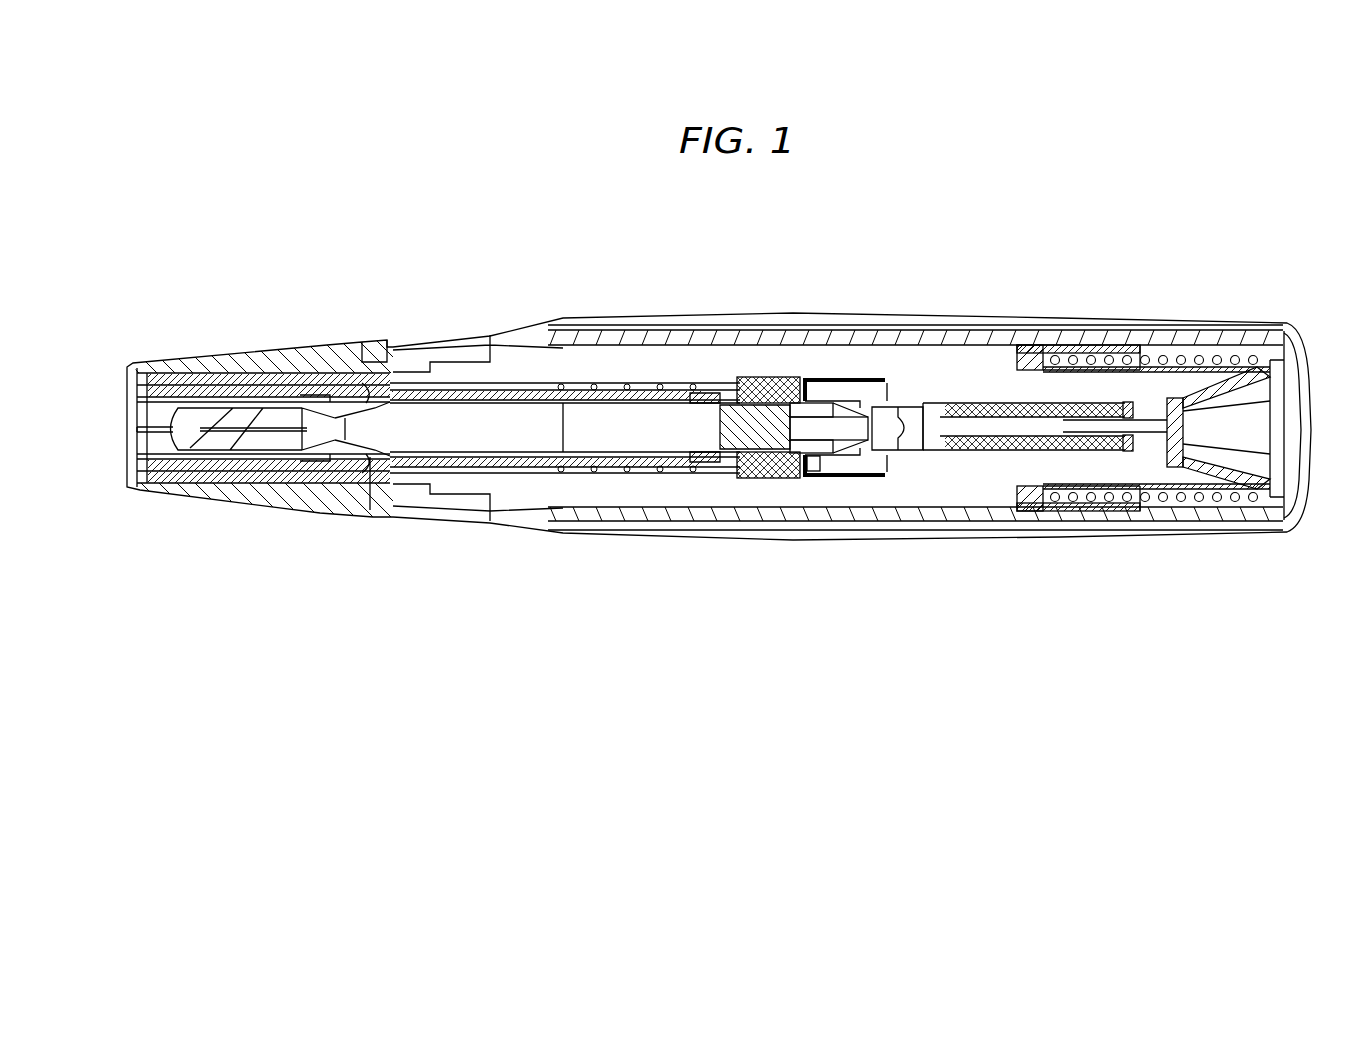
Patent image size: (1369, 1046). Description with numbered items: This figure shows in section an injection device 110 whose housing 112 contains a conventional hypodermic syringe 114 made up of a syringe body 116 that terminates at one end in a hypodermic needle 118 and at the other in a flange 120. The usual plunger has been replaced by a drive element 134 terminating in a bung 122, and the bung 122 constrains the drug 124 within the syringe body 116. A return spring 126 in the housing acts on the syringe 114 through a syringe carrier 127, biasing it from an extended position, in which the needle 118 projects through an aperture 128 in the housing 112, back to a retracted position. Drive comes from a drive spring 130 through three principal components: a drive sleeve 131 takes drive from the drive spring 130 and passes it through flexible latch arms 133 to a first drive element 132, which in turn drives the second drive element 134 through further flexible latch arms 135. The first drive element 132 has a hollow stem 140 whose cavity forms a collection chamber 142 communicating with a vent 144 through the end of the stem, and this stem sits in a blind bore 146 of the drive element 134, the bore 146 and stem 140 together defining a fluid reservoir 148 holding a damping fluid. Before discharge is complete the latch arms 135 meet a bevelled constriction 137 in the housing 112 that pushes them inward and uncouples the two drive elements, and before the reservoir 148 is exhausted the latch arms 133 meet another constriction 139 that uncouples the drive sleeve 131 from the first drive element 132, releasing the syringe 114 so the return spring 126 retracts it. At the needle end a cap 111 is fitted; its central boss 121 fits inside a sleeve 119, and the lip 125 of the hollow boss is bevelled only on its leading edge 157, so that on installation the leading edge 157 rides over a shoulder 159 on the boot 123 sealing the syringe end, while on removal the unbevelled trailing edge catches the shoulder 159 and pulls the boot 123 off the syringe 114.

The injection device 110 is at (807, 293).
The cap 111 is at (147, 360).
The housing 112 is at (967, 327).
The hypodermic syringe 114 is at (510, 395).
The syringe body 116 is at (686, 397).
The hypodermic needle 118 is at (272, 415).
The sleeve 119 is at (341, 400).
The flange 120 is at (815, 462).
The central boss 121 is at (304, 398).
The bung 122 is at (727, 440).
The boot 123 is at (200, 405).
The drug 124 is at (624, 437).
The lip 125 is at (377, 347).
The return spring 126 is at (622, 380).
The syringe carrier 127 is at (750, 377).
The aperture 128 is at (117, 452).
The drive spring 130 is at (1210, 360).
The drive sleeve 131 is at (1030, 358).
The first drive element 132 is at (1165, 475).
The flexible latch arms 133 is at (1280, 355).
The drive element 134 is at (903, 450).
The flexible latch arms 135 is at (1135, 395).
The constriction 137 is at (833, 462).
The constriction 139 is at (885, 447).
The hollow stem 140 is at (990, 455).
The collection chamber 142 is at (1000, 425).
The vent 144 is at (937, 425).
The blind bore 146 is at (905, 412).
The fluid reservoir 148 is at (907, 447).
The leading edge 157 is at (368, 455).
The shoulder 159 is at (367, 387).